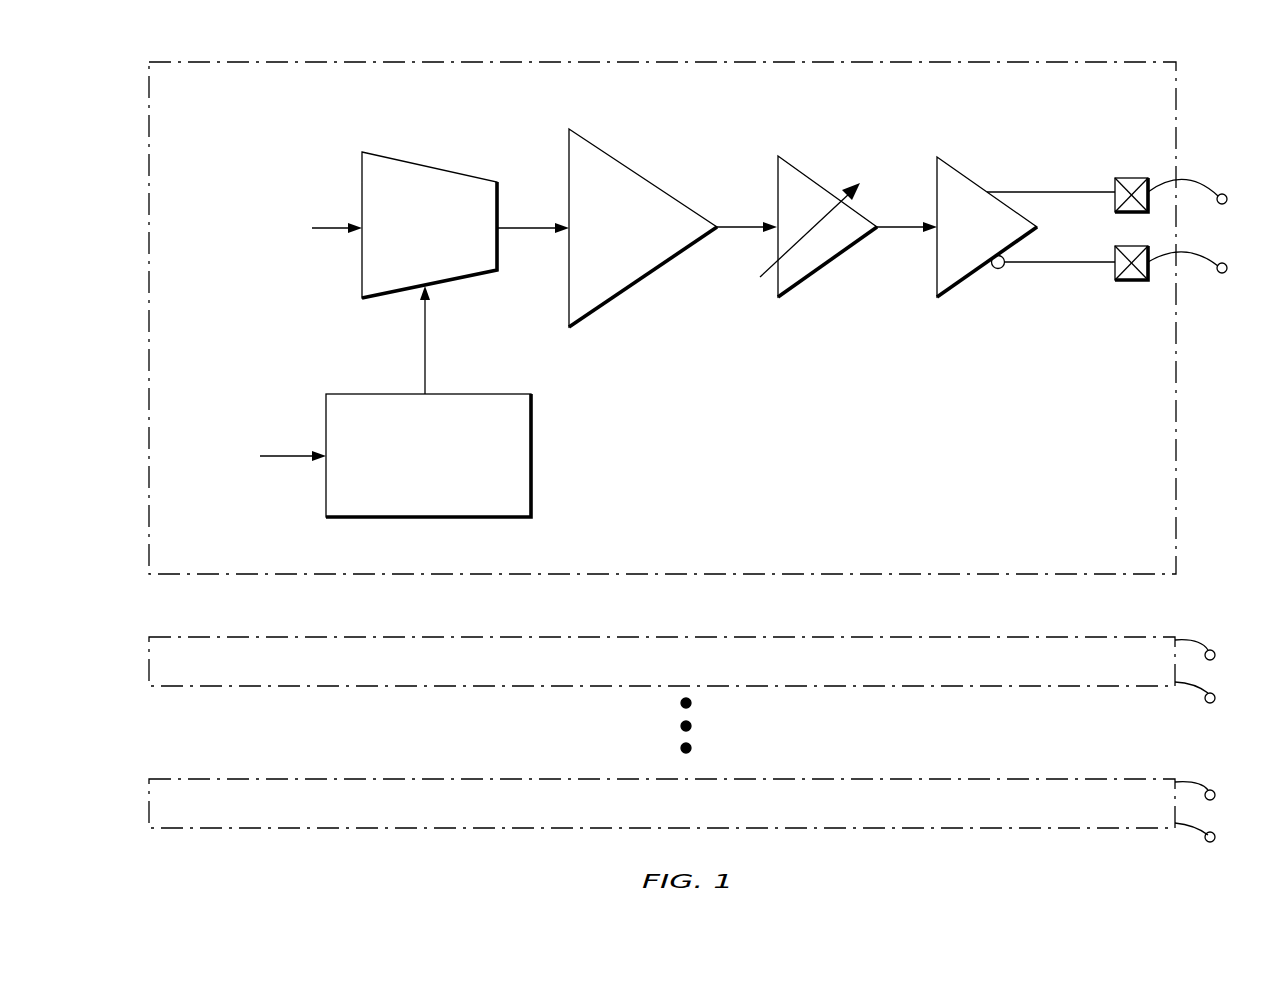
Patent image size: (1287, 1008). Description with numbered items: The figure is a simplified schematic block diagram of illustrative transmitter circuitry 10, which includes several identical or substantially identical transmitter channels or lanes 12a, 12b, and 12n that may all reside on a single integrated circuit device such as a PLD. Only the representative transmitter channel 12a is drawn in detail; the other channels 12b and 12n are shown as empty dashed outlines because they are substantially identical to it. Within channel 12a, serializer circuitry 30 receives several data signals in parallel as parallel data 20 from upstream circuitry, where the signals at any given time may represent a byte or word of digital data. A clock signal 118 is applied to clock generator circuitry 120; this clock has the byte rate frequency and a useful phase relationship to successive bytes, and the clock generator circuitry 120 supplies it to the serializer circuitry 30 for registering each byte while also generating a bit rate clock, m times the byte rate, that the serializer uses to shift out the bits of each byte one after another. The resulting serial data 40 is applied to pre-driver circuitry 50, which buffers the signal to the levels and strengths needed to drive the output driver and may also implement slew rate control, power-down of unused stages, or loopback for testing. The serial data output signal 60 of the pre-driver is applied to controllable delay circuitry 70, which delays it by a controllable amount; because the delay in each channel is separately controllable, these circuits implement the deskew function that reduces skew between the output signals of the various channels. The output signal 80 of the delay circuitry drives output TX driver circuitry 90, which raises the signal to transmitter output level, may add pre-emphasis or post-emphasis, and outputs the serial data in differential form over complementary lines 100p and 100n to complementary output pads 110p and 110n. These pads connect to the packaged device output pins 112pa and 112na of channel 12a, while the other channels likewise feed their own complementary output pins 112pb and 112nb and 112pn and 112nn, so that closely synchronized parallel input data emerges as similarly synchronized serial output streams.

The transmitter circuitry 10 is at (115, 82).
The transmitter channel 12a is at (220, 105).
The transmitter channel 12b is at (212, 675).
The transmitter channel 12n is at (212, 817).
The parallel data 20 is at (333, 230).
The serializer circuitry 30 is at (425, 162).
The serial data 40 is at (529, 232).
The pre-driver circuitry 50 is at (636, 170).
The serial data output signal 60 is at (730, 232).
The controllable delay circuitry 70 is at (818, 183).
The output signal 80 is at (898, 232).
The output TX driver circuitry 90 is at (973, 182).
The positive differential output line 100p is at (1045, 192).
The negative differential output line 100n is at (1037, 263).
The output pad 110p is at (1130, 178).
The output pad 110n is at (1122, 280).
The output pin 112pa is at (1255, 156).
The output pin 112na is at (1222, 274).
The output pin 112pb is at (1208, 650).
The output pin 112nb is at (1212, 693).
The output pin 112pn is at (1208, 790).
The output pin 112nn is at (1215, 837).
The clock signal 118 is at (285, 457).
The clock generator circuitry 120 is at (487, 518).